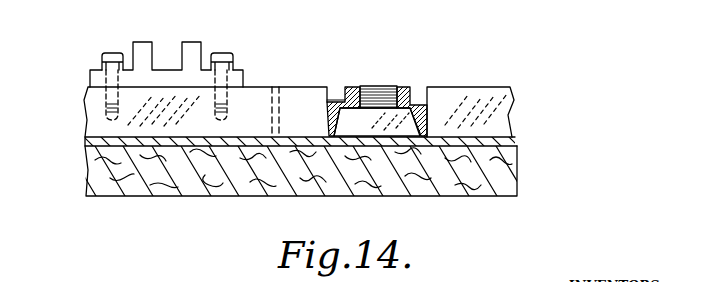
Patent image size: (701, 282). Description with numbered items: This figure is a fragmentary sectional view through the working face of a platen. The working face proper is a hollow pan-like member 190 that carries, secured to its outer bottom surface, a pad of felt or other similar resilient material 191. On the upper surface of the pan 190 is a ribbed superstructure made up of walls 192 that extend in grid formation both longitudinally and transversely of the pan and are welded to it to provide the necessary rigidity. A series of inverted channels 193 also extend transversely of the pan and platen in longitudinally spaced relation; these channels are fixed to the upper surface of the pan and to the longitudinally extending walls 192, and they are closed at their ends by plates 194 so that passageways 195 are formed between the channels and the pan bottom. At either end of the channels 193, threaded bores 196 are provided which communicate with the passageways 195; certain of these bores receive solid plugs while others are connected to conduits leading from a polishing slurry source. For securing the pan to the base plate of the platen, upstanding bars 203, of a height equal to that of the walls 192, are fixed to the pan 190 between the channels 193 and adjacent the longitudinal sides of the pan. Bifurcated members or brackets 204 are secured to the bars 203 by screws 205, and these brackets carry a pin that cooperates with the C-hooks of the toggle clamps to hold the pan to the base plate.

The hollow pan-like member 190 is at (505, 140).
The pad of felt or other similar resilient material 191 is at (492, 168).
The walls 192 is at (490, 87).
The inverted channels 193 is at (332, 100).
The plates 194 is at (408, 118).
The passageways 195 is at (411, 88).
The threaded bores 196 is at (381, 94).
The upstanding bars 203 is at (252, 107).
The bifurcated members or brackets 204 is at (158, 80).
The screws 205 is at (113, 63).